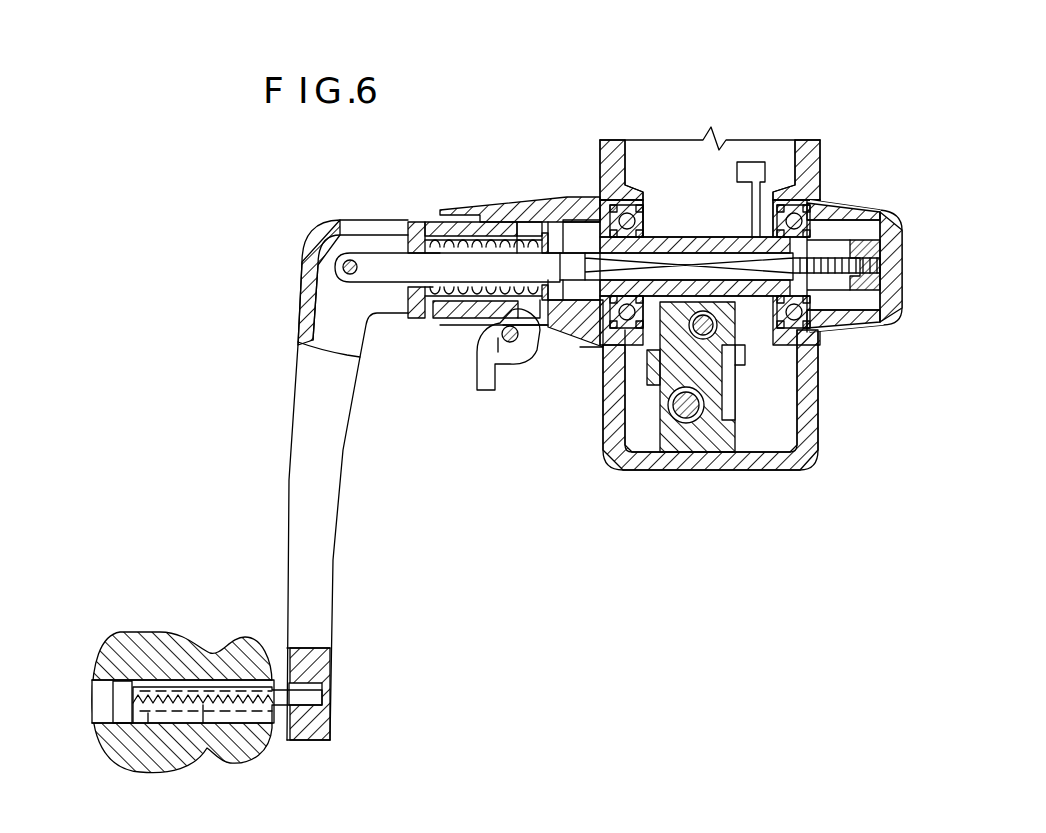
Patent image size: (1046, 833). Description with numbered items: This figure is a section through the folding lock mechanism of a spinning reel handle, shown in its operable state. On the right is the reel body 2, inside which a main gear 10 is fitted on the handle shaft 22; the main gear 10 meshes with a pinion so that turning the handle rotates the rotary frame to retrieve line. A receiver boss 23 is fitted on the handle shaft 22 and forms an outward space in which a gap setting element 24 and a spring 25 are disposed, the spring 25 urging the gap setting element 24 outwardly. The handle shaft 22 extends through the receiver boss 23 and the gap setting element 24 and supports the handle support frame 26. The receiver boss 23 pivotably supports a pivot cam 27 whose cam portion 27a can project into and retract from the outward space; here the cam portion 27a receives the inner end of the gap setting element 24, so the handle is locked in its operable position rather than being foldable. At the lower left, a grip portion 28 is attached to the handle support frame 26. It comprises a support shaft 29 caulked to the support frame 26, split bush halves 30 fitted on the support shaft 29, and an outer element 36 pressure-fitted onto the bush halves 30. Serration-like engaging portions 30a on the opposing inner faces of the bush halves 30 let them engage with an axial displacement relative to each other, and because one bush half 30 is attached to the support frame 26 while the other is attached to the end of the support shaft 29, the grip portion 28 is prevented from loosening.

The reel body 2 is at (813, 443).
The main gear 10 is at (742, 370).
The handle shaft 22 is at (693, 258).
The receiver boss 23 is at (518, 198).
The gap setting element 24 is at (428, 224).
The spring 25 is at (430, 318).
The handle support frame 26 is at (288, 450).
The pivot cam 27 is at (527, 363).
The cam portion 27a is at (521, 288).
The grip portion 28 is at (182, 661).
The support shaft 29 is at (103, 708).
The split bush halves 30 is at (213, 677).
The serration-like engaging portions 30a is at (215, 721).
The outer element 36 is at (163, 635).